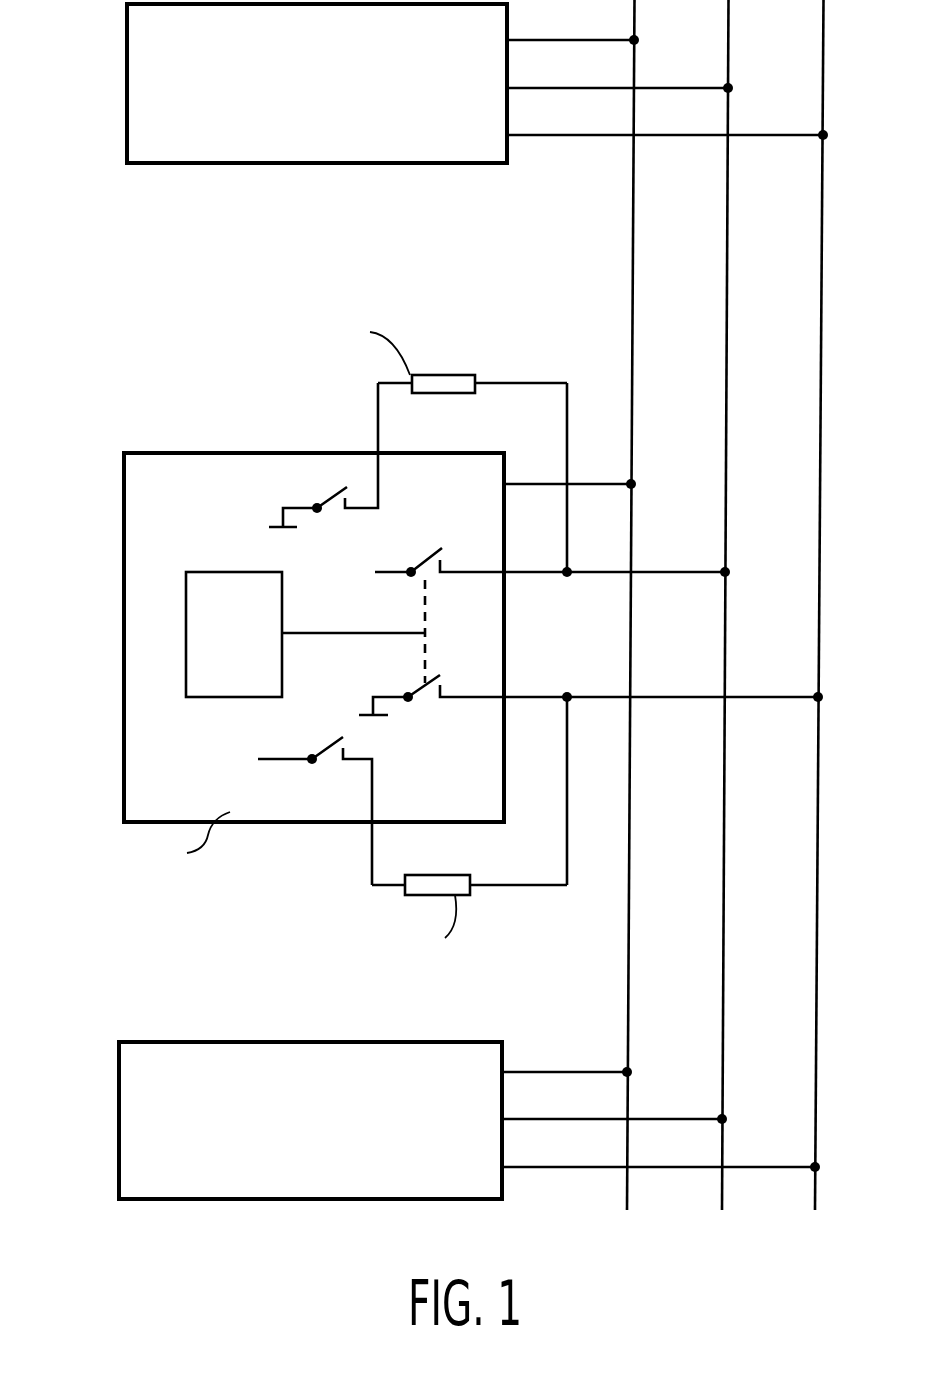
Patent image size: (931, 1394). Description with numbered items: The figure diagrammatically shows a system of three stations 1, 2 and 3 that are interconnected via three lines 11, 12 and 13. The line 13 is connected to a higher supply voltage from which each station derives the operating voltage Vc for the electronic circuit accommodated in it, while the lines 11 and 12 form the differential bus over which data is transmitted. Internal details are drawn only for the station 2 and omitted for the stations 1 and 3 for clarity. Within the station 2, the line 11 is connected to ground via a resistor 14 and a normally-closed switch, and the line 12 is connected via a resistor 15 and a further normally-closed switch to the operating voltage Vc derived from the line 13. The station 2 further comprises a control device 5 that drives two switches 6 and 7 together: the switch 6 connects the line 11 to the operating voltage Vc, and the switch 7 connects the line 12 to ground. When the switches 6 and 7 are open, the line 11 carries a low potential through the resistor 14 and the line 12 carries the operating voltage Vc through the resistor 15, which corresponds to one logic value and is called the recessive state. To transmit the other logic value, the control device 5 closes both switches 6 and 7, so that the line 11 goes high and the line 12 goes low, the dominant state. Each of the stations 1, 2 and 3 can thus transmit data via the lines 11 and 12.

The station 1 is at (318, 165).
The station 2 is at (256, 450).
The station 3 is at (251, 1040).
The control device 5 is at (237, 571).
The switch 6 is at (432, 553).
The switch 7 is at (433, 676).
The line 11 is at (724, 530).
The line 12 is at (817, 578).
The line 13 is at (633, 446).
The resistor 14 is at (455, 393).
The resistor 15 is at (455, 874).